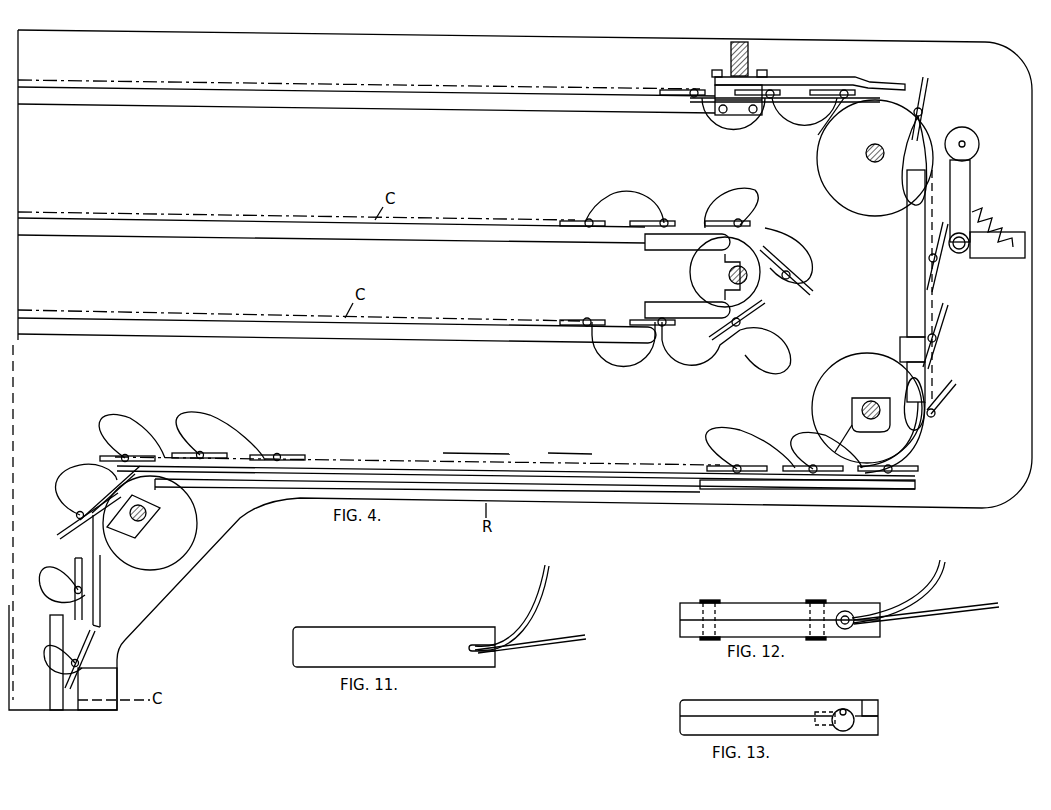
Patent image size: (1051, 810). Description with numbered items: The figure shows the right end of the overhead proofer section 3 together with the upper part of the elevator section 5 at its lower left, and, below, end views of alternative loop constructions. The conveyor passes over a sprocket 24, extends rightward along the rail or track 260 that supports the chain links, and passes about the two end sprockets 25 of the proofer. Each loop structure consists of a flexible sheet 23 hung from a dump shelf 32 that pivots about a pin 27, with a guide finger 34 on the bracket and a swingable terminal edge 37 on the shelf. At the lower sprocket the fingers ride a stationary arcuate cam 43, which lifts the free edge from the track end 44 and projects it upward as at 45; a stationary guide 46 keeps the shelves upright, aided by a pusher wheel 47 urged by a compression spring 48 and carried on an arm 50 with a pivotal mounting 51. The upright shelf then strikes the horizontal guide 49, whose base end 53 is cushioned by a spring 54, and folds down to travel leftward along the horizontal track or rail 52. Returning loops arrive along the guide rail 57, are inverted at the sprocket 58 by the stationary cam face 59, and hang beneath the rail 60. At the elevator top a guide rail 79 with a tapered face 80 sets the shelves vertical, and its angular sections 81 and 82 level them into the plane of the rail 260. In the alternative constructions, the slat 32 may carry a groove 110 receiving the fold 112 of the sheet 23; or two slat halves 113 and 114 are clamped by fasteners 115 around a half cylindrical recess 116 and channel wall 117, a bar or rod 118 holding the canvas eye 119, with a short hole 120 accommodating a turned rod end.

In FIG. 4, the overhead proofer section 3 is at (377, 33).
In FIG. 4, the elevator section 5 is at (120, 682).
In FIG. 4, the flexible sheet 23 is at (742, 142).
In FIG. 11, the flexible sheet 23 is at (543, 583).
In FIG. 12, the flexible sheet 23 is at (935, 575).
In FIG. 4, the sprocket 24 is at (175, 560).
In FIG. 4, the end sprocket 25 is at (855, 212).
In FIG. 4, the pin 27 is at (928, 112).
In FIG. 4, the dump shelf 32 is at (865, 105).
In FIG. 11, the dump shelf 32 is at (340, 637).
In FIG. 12, the dump shelf 32 is at (762, 608).
In FIG. 13, the dump shelf 32 is at (728, 705).
In FIG. 4, the guide finger 34 is at (665, 90).
In FIG. 4, the swingable terminal edge 37 is at (925, 477).
In FIG. 4, the stationary arcuate cam 43 is at (905, 452).
In FIG. 4, the track end 44 is at (915, 489).
In FIG. 4, the upwardly projected position 45 is at (950, 383).
In FIG. 4, the stationary guide 46 is at (917, 300).
In FIG. 4, the pusher wheel 47 is at (979, 144).
In FIG. 4, the compression spring 48 is at (985, 225).
In FIG. 4, the horizontal guide 49 is at (860, 76).
In FIG. 4, the arm 50 is at (968, 188).
In FIG. 4, the pivotal mounting 51 is at (965, 250).
In FIG. 4, the horizontal track or rail 52 is at (630, 100).
In FIG. 4, the base end 53 is at (715, 88).
In FIG. 4, the spring 54 is at (750, 55).
In FIG. 4, the guide rail 57 is at (490, 236).
In FIG. 4, the sprocket 58 is at (690, 272).
In FIG. 4, the stationary cam face 59 is at (697, 222).
In FIG. 4, the rail 60 is at (520, 332).
In FIG. 4, the guide rail 79 is at (78, 603).
In FIG. 4, the tapered face 80 is at (52, 637).
In FIG. 4, the angular section 81 is at (115, 483).
In FIG. 4, the angular section 82 is at (172, 456).
In FIG. 11, the groove 110 is at (478, 644).
In FIG. 11, the fold 112 is at (462, 655).
In FIG. 12, the slat half 113 is at (682, 612).
In FIG. 12, the slat half 114 is at (682, 630).
In FIG. 12, the rivets or fasteners 115 is at (710, 600).
In FIG. 12, the half cylindrical recess 116 is at (850, 612).
In FIG. 13, the half cylindrical recess 116 is at (845, 710).
In FIG. 13, the channel wall 117 is at (878, 705).
In FIG. 12, the bar or rod 118 is at (850, 630).
In FIG. 12, the canvas eye 119 is at (840, 632).
In FIG. 13, the short hole 120 is at (824, 710).
In FIG. 4, the rail or track 260 is at (365, 472).